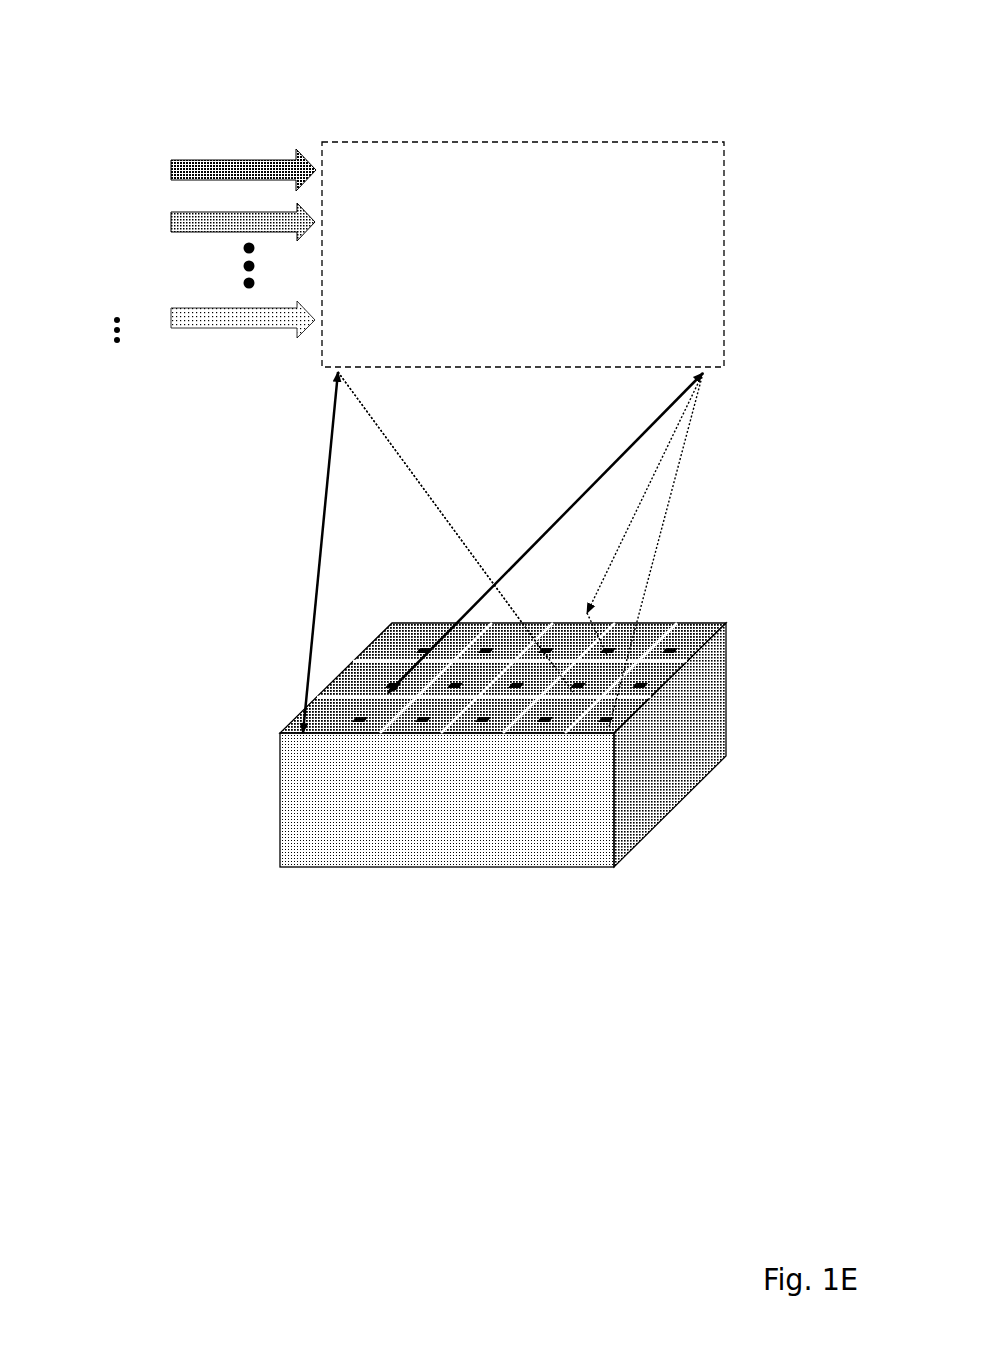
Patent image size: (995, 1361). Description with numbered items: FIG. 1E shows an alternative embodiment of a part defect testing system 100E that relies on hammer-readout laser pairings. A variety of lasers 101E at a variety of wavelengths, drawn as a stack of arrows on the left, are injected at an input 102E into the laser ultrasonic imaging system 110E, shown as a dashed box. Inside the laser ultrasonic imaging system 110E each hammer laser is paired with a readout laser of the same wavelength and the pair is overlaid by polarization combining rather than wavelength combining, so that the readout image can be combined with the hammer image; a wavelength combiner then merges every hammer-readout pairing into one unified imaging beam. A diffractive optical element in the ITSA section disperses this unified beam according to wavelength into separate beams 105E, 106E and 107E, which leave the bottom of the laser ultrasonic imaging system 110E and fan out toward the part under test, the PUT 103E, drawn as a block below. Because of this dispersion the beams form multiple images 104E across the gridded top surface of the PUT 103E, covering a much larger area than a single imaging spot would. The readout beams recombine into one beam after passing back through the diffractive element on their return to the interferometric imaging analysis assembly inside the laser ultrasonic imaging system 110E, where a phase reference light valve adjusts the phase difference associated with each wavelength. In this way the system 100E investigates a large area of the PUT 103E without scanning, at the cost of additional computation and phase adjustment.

The part defect testing system 100E is at (728, 84).
The lasers 101E is at (167, 183).
The beam output point of light user interface system 102E is at (320, 360).
The PUT 103E is at (277, 787).
The multiple images 104E is at (390, 632).
The wavelength-split beam 105E is at (407, 668).
The wavelength-split beam 106E is at (548, 595).
The wavelength-split beam 107E is at (457, 518).
The laser ultrasonic imaging system LUIS-2 110E is at (523, 254).